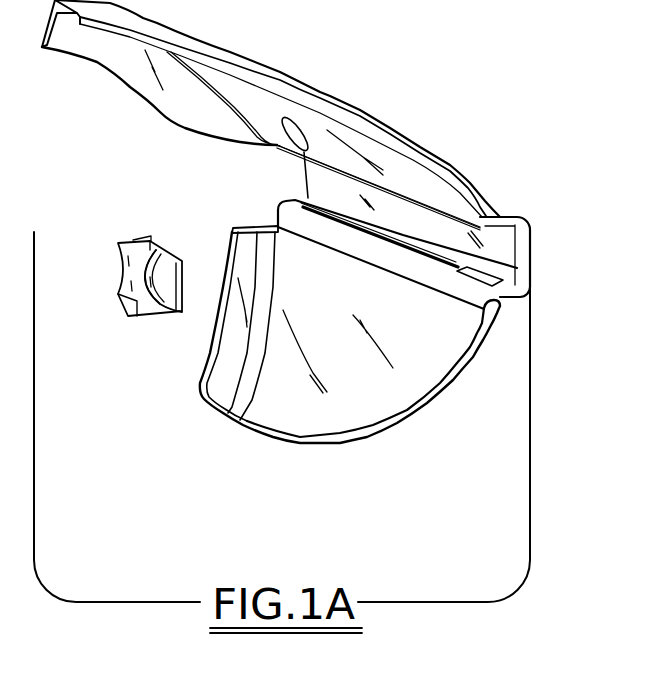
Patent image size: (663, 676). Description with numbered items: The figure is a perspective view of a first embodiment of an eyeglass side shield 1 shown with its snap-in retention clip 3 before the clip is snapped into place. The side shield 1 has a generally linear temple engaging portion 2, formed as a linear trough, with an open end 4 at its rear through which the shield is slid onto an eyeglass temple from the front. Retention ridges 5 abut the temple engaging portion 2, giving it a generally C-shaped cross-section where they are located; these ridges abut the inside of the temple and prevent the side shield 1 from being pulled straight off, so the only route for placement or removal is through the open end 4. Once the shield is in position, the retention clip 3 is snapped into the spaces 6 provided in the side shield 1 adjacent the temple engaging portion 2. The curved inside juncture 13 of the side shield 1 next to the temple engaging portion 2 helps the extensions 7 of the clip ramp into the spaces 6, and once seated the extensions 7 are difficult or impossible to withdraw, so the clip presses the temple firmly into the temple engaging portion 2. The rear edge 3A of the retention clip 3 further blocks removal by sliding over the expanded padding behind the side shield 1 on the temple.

The side shield 1 is at (401, 80).
The temple engaging portion 2 is at (513, 214).
The retention clip 3 is at (130, 278).
The rear edge 3A is at (168, 282).
The open end 4 is at (514, 263).
The retention ridges 5 is at (291, 156).
The spaces 6 is at (503, 282).
The extensions 7 is at (145, 242).
The curved inside juncture 13 is at (361, 245).